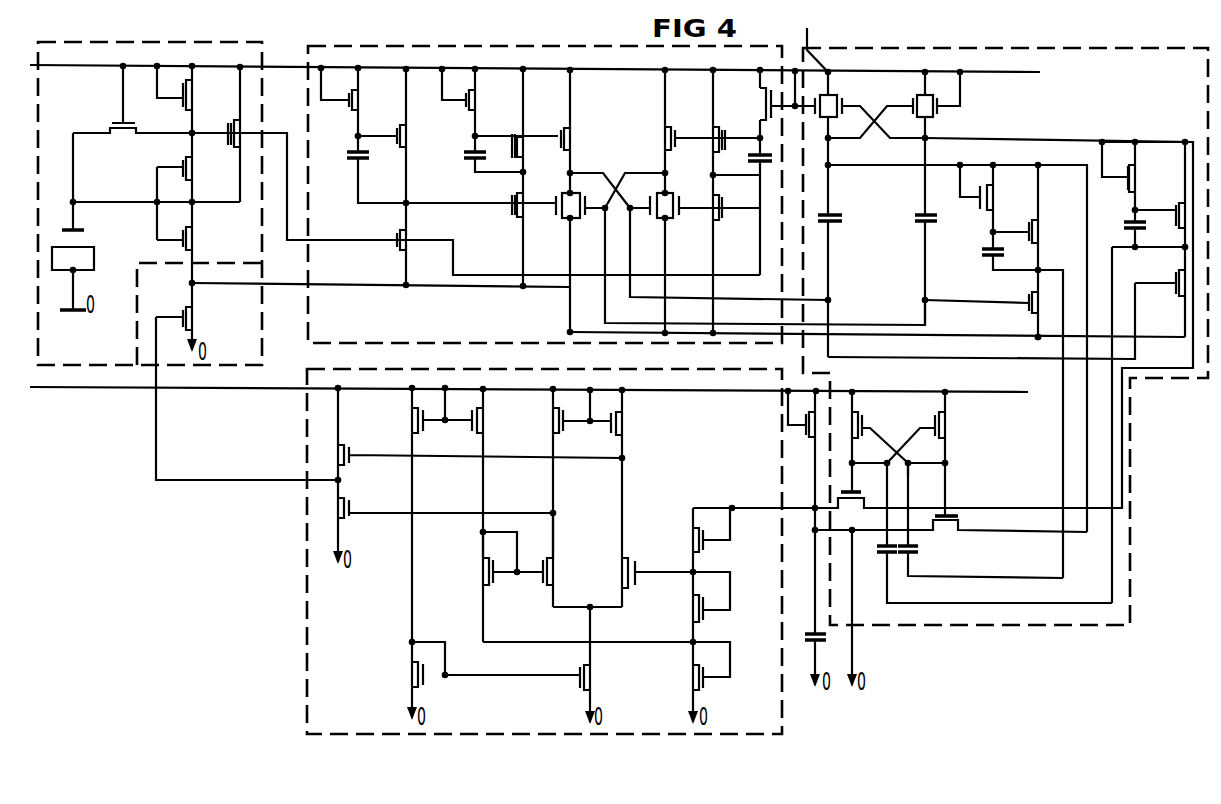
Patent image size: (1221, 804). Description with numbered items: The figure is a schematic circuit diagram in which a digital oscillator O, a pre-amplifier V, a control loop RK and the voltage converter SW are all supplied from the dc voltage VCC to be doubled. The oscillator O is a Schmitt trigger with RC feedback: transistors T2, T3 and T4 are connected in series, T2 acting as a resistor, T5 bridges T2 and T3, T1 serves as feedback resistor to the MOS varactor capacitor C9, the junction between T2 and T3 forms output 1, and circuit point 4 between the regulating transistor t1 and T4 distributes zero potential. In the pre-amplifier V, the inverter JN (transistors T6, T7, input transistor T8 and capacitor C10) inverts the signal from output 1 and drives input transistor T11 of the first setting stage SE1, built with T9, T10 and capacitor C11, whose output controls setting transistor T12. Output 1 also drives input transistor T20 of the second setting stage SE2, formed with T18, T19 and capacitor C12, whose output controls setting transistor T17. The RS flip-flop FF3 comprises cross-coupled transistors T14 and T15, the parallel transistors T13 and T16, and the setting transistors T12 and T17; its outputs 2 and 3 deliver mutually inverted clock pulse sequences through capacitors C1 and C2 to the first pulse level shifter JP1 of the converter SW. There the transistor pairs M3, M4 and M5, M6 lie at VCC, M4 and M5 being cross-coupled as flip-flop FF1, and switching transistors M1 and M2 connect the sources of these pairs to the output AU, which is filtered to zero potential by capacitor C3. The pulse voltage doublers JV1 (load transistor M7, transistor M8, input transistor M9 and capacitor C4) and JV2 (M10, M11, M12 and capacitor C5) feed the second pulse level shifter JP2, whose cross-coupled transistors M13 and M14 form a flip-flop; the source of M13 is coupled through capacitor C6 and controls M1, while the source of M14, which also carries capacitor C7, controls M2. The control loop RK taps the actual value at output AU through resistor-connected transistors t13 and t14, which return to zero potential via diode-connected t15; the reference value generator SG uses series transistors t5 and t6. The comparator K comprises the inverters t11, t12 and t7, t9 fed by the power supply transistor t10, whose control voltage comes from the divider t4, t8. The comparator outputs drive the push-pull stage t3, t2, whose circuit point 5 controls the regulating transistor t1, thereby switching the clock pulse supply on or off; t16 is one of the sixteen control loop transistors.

The digital oscillator O is at (150, 203).
The pre-amplifier V is at (545, 194).
The voltage converter SW is at (1005, 336).
The control loop RK is at (544, 551).
The supply potential VCC is at (561, 240).
The transistor T1 is at (132, 99).
The transistor T2 is at (186, 90).
The transistor T3 is at (174, 160).
The transistor T4 is at (187, 240).
The transistor T5 is at (223, 134).
The transistor T6 is at (351, 110).
The transistor T7 is at (392, 177).
The input transistor T8 is at (387, 231).
The transistor T9 is at (470, 110).
The transistor T10 is at (533, 177).
The input transistor T11 is at (505, 197).
The transistor T12 is at (582, 131).
The transistor T13 is at (554, 263).
The flip-flop transistor T14 is at (591, 224).
The flip-flop transistor T15 is at (651, 201).
The transistor T16 is at (716, 224).
The transistor T17 is at (712, 123).
The transistor T18 is at (731, 201).
The transistor T19 is at (773, 104).
The input transistor T20 is at (732, 224).
The regulating unit transistor t1 is at (185, 318).
The push-pull transistor t2 is at (445, 502).
The push-pull transistor t3 is at (470, 475).
The transistor t4 is at (432, 553).
The transistor t5 is at (488, 515).
The transistor t6 is at (502, 560).
The input transistor t7 is at (557, 498).
The transistor t8 is at (416, 666).
The transistor t9 is at (570, 414).
The power supply transistor t10 is at (531, 664).
The input transistor t11 is at (657, 583).
The transistor t12 is at (631, 498).
The transistor t13 is at (697, 615).
The transistor t14 is at (713, 607).
The transistor t15 is at (697, 667).
The field effect transistor t16 is at (801, 460).
The first switching transistor M1 is at (951, 513).
The second switching transistor M2 is at (861, 481).
The transistor M3 is at (819, 45).
The transistor M4 is at (842, 143).
The transistor M5 is at (910, 143).
The transistor M6 is at (951, 108).
The transistor M7 is at (973, 207).
The transistor M8 is at (1032, 251).
The input transistor M9 is at (994, 305).
The transistor M10 is at (1114, 182).
The transistor M11 is at (1163, 239).
The input transistor M12 is at (1160, 276).
The transistor M13 is at (880, 427).
The transistor M14 is at (936, 427).
The capacitor C1 is at (840, 284).
The capacitor C2 is at (914, 268).
The filter capacitor C3 is at (809, 607).
The capacitor C4 is at (1011, 409).
The capacitor C5 is at (1124, 231).
The capacitor C6 is at (980, 520).
The capacitor C7 is at (987, 533).
The MOS varactor capacitor C9 is at (81, 256).
The capacitor C10 is at (362, 172).
The capacitor C11 is at (481, 156).
The capacitor C12 is at (764, 206).
The output 1 is at (476, 192).
The output 2 is at (729, 255).
The output 3 is at (765, 268).
The circuit point 4 is at (373, 285).
The circuit point 5 is at (247, 413).
The bistable flip-flop FF1 is at (876, 137).
The bistable flip-flop FF3 is at (617, 178).
The first setting stage SE1 is at (516, 154).
The second setting stage SE2 is at (740, 155).
The inverter JN is at (465, 184).
The first pulse level shifter JP1 is at (957, 348).
The second pulse level shifter JP2 is at (925, 481).
The first pulse voltage doubler JV1 is at (999, 184).
The second pulse voltage doubler JV2 is at (1143, 160).
The reference value generator SG is at (506, 517).
The comparator K is at (575, 529).
The output AU is at (907, 495).